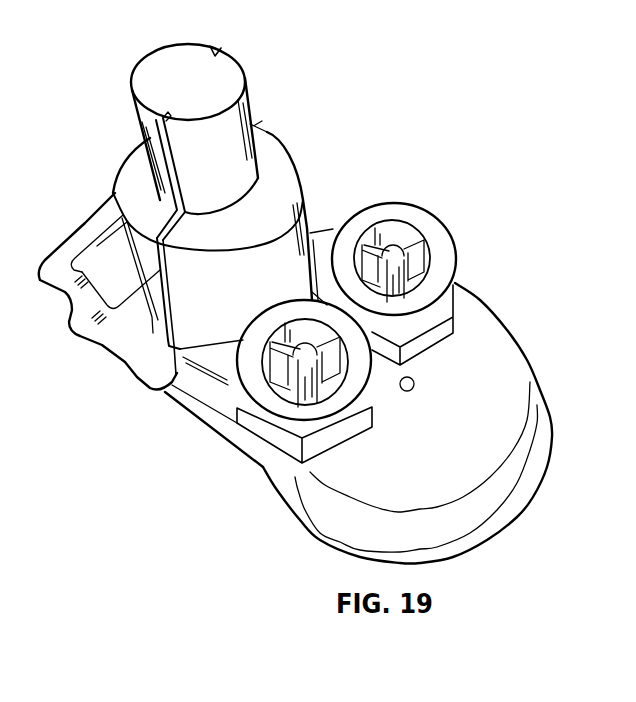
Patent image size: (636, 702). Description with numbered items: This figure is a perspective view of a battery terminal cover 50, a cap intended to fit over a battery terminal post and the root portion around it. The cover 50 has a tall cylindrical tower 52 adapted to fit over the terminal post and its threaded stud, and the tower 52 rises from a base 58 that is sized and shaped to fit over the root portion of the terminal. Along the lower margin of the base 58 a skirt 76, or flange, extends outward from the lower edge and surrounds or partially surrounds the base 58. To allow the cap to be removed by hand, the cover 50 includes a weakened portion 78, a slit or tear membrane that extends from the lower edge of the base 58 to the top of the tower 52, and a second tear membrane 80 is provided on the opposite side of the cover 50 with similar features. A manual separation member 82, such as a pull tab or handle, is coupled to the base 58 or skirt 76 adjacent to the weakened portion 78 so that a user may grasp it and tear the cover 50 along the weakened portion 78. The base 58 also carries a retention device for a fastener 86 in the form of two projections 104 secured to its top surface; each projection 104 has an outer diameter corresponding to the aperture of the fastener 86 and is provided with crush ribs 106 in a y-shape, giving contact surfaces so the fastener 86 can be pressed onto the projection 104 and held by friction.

The battery terminal cover 50 is at (550, 295).
The tower 52 is at (68, 332).
The base 58 is at (467, 392).
The skirt 76 is at (523, 506).
The weakened portion 78 is at (160, 268).
The second tear membrane 80 is at (217, 54).
The manual separation member 82 is at (78, 241).
The fastener 86 is at (446, 270).
The projection 104 is at (397, 243).
The crush rib 106 is at (372, 244).